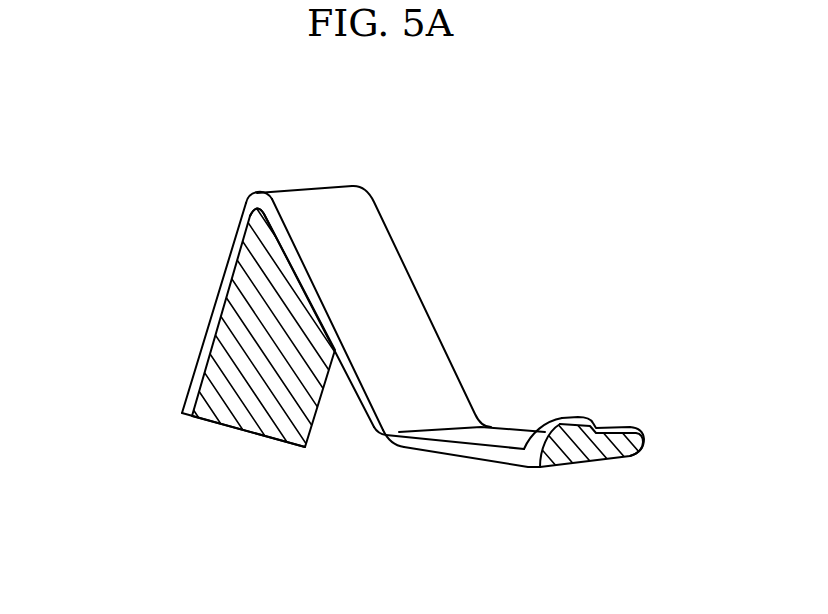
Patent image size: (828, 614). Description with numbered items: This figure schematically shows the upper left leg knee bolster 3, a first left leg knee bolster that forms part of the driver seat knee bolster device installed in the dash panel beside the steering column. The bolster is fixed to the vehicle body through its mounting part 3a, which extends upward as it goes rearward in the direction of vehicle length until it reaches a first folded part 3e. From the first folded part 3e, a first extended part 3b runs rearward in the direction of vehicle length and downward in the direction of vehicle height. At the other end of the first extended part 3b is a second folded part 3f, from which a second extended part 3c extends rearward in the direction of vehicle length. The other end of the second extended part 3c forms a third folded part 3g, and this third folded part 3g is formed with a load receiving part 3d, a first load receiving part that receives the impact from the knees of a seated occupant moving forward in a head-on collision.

The upper left leg knee bolster 3 is at (215, 492).
The mounting part 3a is at (228, 369).
The first extended part 3b is at (385, 271).
The second extended part 3c is at (512, 433).
The load receiving part 3d is at (645, 437).
The first folded part 3e is at (254, 192).
The second folded part 3f is at (389, 446).
The third folded part 3g is at (532, 466).